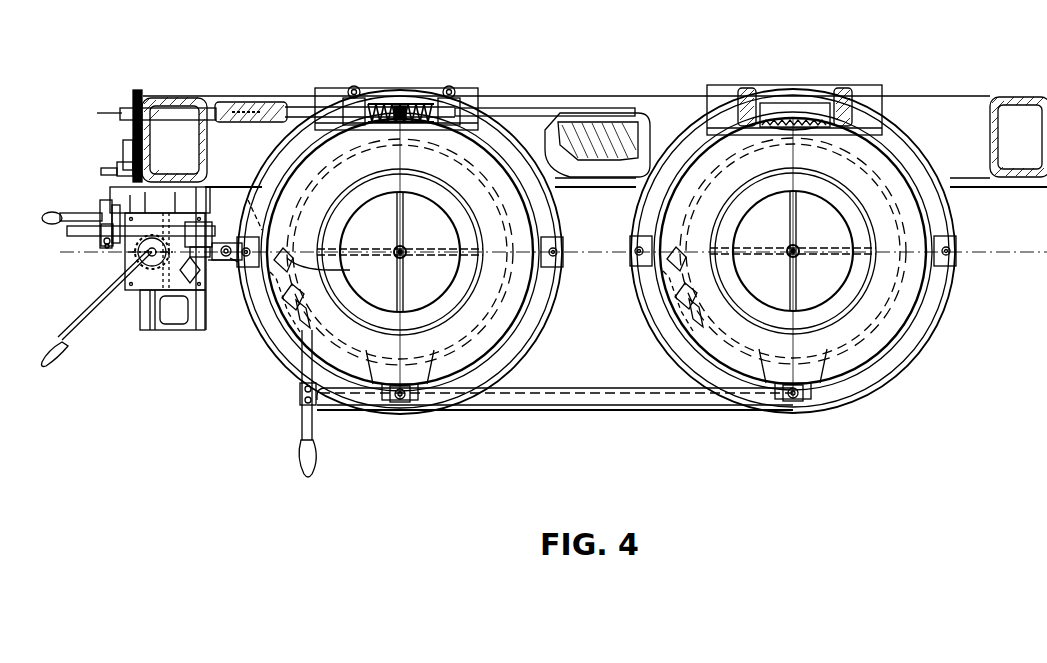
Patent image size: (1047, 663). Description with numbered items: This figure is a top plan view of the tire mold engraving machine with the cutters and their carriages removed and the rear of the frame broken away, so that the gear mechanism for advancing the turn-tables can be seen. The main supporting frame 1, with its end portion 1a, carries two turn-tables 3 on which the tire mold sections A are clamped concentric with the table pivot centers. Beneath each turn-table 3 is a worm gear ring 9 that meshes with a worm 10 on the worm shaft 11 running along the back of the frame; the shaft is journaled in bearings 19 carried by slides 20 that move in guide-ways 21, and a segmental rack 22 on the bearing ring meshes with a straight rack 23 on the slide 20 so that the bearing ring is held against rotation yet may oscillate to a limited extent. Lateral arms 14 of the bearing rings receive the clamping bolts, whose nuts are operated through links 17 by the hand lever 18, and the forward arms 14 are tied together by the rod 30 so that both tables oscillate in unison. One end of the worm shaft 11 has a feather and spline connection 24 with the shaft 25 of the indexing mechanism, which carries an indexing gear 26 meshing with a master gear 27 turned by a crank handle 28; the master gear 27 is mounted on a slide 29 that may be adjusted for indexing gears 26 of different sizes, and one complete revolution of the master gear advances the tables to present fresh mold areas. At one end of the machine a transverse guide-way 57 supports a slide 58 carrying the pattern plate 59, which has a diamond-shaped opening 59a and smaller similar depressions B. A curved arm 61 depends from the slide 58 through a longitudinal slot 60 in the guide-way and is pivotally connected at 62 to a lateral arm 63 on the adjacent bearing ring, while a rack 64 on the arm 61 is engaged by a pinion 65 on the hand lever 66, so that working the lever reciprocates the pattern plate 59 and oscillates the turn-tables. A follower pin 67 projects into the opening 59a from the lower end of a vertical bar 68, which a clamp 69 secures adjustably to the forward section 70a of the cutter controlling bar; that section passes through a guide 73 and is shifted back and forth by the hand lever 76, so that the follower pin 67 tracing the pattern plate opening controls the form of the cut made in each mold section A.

The main supporting frame 1 is at (208, 104).
The beam end cap 1a is at (207, 160).
The turn-table 3 is at (525, 322).
The worm gear ring 9 is at (438, 106).
The worm 10 is at (402, 106).
The worm shaft 11 is at (522, 112).
The lateral arm 14 is at (413, 392).
The link 17 is at (328, 398).
The hand lever 18 is at (314, 452).
The bearing 19 is at (350, 106).
The slide 20 is at (378, 104).
The guide-way 21 is at (324, 92).
The segmental rack 22 is at (808, 126).
The straight rack 23 is at (803, 112).
The feather and spline connection 24 is at (248, 110).
The shaft of the indexing mechanism 25 is at (172, 108).
The indexing gear 26 is at (133, 101).
The master gear 27 is at (128, 160).
The crank handle 28 is at (110, 172).
The slide 29 is at (123, 146).
The rod 30 is at (605, 396).
The guide-way 57 is at (150, 320).
The slide 58 is at (140, 292).
The pattern plate 59 is at (150, 270).
The opening of the pattern plate 59a is at (182, 285).
The longitudinal slot 60 is at (170, 300).
The curved arm 61 is at (208, 262).
The pivot connection 62 is at (218, 262).
The lateral arm 63 is at (228, 262).
The rack 64 is at (152, 330).
The pinion 65 is at (138, 253).
The hand lever 66 is at (92, 310).
The follower pin 67 is at (200, 332).
The vertical bar 68 is at (202, 247).
The clamp 69 is at (200, 236).
The forward section of the cutter controlling bar 70a is at (261, 206).
The guide 73 is at (100, 238).
The hand lever 76 is at (72, 213).
The tire mold section A is at (290, 316).
The depression in the pattern plate B is at (329, 270).